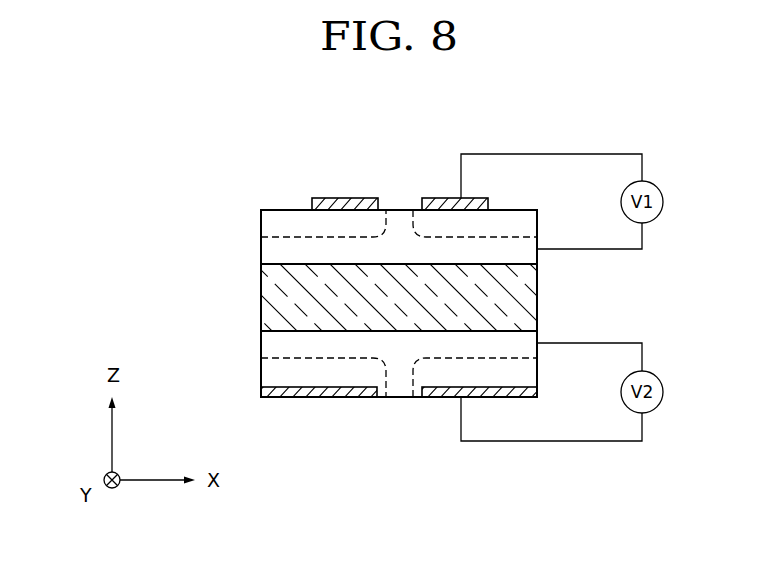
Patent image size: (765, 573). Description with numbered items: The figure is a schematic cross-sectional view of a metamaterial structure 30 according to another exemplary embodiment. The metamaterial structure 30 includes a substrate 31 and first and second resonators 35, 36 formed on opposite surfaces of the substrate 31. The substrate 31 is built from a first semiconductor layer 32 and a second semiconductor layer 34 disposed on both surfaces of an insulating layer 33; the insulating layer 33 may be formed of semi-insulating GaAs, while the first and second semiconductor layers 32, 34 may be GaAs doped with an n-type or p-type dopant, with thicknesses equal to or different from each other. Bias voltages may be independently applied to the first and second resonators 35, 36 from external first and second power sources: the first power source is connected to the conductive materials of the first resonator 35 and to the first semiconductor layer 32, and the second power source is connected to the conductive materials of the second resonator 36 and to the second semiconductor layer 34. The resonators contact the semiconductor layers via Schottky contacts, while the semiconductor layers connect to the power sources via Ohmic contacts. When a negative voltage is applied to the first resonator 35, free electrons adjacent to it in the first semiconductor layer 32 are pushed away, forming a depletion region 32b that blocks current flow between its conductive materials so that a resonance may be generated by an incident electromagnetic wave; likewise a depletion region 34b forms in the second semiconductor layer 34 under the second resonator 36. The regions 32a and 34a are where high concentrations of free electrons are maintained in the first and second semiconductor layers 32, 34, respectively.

The metamaterial structure 30 is at (218, 178).
The substrate 31 is at (178, 218).
The first semiconductor layer 32 is at (250, 222).
The region of high free-electron concentration 32a is at (530, 255).
The depletion region 32b is at (283, 215).
The insulating layer 33 is at (267, 300).
The second semiconductor layer 34 is at (250, 372).
The region of high free-electron concentration 34a is at (529, 340).
The depletion region 34b is at (530, 372).
The first resonator 35 is at (348, 202).
The second resonator 36 is at (327, 393).